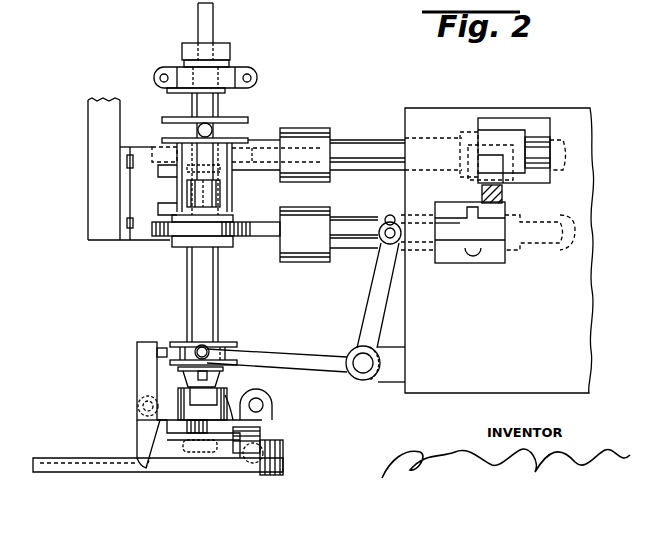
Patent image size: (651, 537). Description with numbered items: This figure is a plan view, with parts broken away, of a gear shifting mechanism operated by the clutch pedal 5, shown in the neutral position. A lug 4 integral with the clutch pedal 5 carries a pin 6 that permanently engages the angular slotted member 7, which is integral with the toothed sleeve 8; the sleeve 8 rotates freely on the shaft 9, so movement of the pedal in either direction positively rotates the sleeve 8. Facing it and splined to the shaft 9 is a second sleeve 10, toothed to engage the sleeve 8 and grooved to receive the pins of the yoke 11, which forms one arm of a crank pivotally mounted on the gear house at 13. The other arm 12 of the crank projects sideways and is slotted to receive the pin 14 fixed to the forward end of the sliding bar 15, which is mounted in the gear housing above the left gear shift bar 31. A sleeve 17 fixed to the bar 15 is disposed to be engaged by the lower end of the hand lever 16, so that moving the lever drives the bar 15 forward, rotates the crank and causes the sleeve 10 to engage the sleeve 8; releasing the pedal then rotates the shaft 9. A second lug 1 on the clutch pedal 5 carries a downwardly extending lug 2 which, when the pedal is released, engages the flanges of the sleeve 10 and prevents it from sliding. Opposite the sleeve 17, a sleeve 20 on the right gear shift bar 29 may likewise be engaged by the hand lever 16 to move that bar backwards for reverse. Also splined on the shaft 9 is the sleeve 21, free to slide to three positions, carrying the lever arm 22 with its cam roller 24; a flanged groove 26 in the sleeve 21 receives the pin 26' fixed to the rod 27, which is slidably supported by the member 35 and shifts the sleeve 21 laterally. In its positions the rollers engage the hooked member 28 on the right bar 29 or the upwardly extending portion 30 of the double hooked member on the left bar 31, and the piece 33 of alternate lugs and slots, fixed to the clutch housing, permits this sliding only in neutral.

The second lug 1 is at (141, 375).
The downwardly extending lug 2 is at (163, 343).
The lug 4 is at (160, 420).
The clutch pedal 5 is at (78, 462).
The pin 6 is at (183, 398).
The angular slotted member 7 is at (243, 407).
The toothed sleeve 8 is at (222, 395).
The shaft 9 is at (218, 300).
The second sleeve 10 is at (188, 350).
The yoke 11 is at (300, 333).
The crank arm 12 is at (375, 302).
The crank pivot 13 is at (363, 374).
The pin 14 is at (390, 216).
The sliding bar 15 is at (447, 245).
The hand lever 16 is at (503, 196).
The sleeve 17 is at (480, 246).
The sleeve 20 is at (503, 130).
The sleeve 21 is at (232, 177).
The lever arm 22 is at (232, 208).
The cam roller 24 is at (220, 200).
The flanged groove 26 is at (312, 140).
The pin 26' is at (207, 115).
The rod 27 is at (200, 23).
The hooked member 28 is at (272, 143).
The right gear shift bar 29 is at (540, 135).
The upwardly extending portion 30 is at (267, 240).
The left gear shift bar 31 is at (560, 224).
The piece 33 is at (140, 153).
The supporting member 35 is at (232, 72).